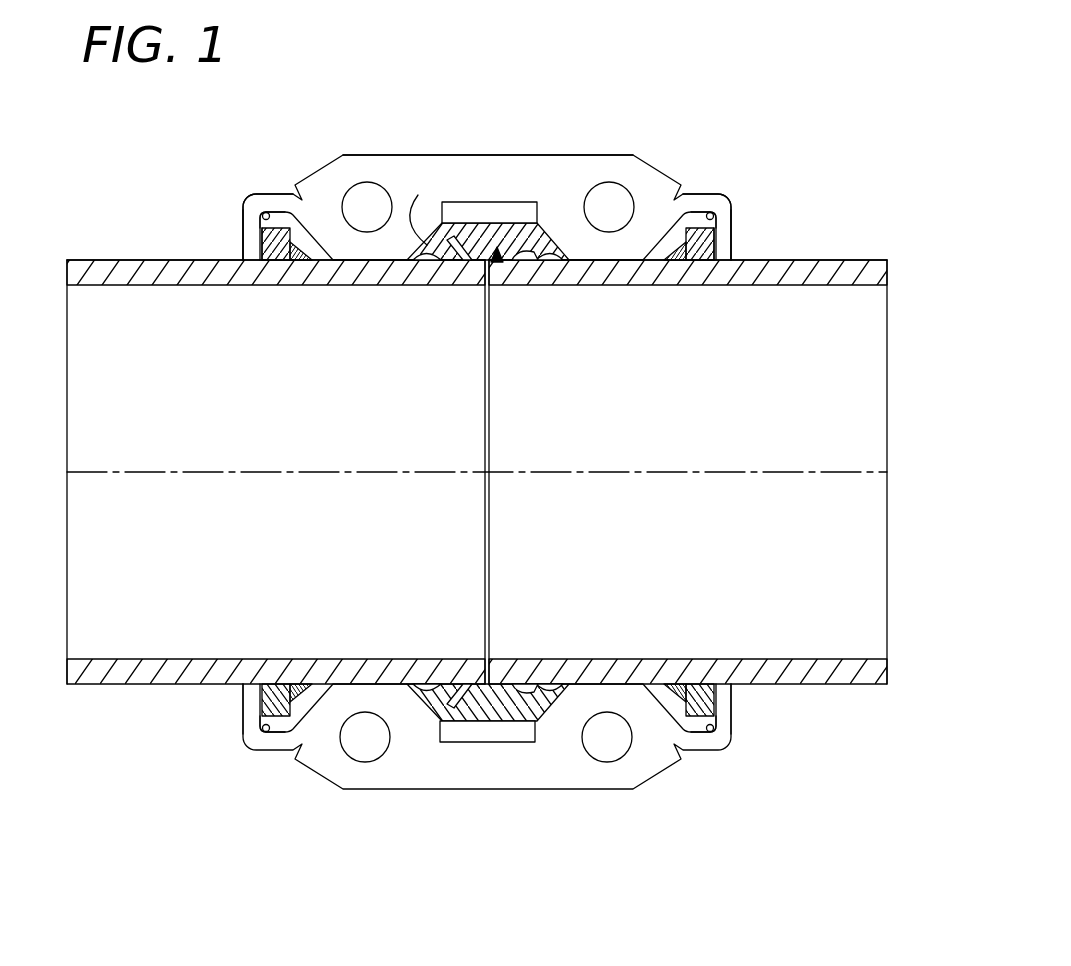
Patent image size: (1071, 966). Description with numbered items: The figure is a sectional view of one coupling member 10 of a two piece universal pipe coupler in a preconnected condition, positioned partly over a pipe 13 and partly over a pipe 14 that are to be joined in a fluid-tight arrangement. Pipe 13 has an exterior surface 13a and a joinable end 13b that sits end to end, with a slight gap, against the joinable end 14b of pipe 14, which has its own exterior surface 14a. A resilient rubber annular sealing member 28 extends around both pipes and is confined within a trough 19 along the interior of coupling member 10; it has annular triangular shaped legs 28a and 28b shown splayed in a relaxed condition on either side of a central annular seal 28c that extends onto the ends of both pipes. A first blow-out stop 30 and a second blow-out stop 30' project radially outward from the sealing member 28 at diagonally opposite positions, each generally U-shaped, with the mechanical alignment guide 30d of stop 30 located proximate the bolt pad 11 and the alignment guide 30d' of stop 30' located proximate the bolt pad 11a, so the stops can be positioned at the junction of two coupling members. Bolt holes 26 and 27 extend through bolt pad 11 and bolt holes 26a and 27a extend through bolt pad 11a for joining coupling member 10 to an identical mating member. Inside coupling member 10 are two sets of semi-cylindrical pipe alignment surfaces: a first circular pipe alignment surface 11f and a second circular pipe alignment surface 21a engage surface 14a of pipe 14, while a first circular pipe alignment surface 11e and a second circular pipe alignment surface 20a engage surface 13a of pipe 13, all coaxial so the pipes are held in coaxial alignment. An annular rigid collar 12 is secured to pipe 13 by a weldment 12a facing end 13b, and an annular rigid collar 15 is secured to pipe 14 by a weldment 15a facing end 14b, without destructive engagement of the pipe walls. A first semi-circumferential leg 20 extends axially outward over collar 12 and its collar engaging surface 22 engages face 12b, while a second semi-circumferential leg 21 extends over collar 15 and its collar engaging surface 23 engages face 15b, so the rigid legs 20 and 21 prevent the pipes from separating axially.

The coupling member 10 is at (579, 164).
The bolt pad 11 is at (405, 157).
The bolt pad 11a is at (415, 790).
The first circular pipe alignment surface 11e is at (372, 262).
The first circular pipe alignment surface 11f is at (612, 262).
The annular rigid collar 12 is at (273, 243).
The weldment 12a is at (296, 262).
The face of collar 12b is at (258, 248).
The pipe 13 is at (93, 260).
The exterior surface 13a is at (117, 260).
The joinable end 13b is at (482, 607).
The pipe 14 is at (887, 273).
The exterior surface 14a is at (818, 262).
The joinable end 14b is at (490, 552).
The annular rigid collar 15 is at (708, 245).
The weldment 15a is at (675, 263).
The face of collar 15b is at (727, 263).
The trough 19 is at (431, 206).
The first semi-circumferential leg 20 is at (270, 199).
The second circular pipe alignment surface 20a is at (244, 262).
The second semi-circumferential leg 21 is at (716, 207).
The second circular pipe alignment surface 21a is at (722, 262).
The collar engaging surface 22 is at (265, 207).
The collar engaging surface 23 is at (714, 224).
The bolt hole 26 is at (352, 190).
The bolt hole 26a is at (347, 755).
The bolt hole 27 is at (631, 193).
The bolt hole 27a is at (625, 755).
The annular sealing member 28 is at (499, 266).
The annular triangular shaped leg 28a is at (441, 262).
The annular triangular shaped leg 28b is at (548, 262).
The central annular seal 28c is at (478, 262).
The first blow-out stop 30 is at (484, 151).
The mechanical alignment guide 30d is at (509, 166).
The second blow-out stop 30' is at (482, 794).
The alignment guide 30d' is at (508, 784).